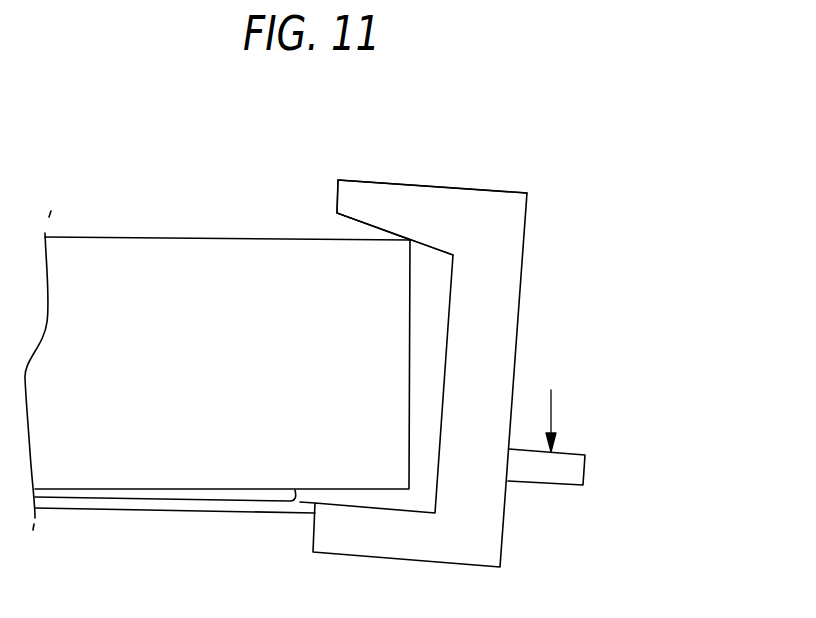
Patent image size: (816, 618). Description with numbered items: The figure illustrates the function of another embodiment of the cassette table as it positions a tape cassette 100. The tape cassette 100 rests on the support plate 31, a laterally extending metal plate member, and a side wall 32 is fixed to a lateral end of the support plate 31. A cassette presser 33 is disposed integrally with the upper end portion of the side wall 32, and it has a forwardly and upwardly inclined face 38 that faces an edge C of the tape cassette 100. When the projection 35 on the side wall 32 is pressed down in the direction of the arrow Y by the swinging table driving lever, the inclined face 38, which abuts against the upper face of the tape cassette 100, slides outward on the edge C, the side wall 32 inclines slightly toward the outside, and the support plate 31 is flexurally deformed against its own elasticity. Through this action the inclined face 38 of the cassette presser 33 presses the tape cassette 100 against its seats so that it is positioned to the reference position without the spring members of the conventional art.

The tape cassette 100 is at (143, 237).
The support plate 31 is at (162, 509).
The side wall 32 is at (512, 310).
The cassette presser 33 is at (391, 183).
The projection 35 is at (573, 462).
The inclined face 38 is at (356, 220).
The edge of the tape cassette C is at (403, 253).
The arrow indicating pressing direction Y is at (558, 421).